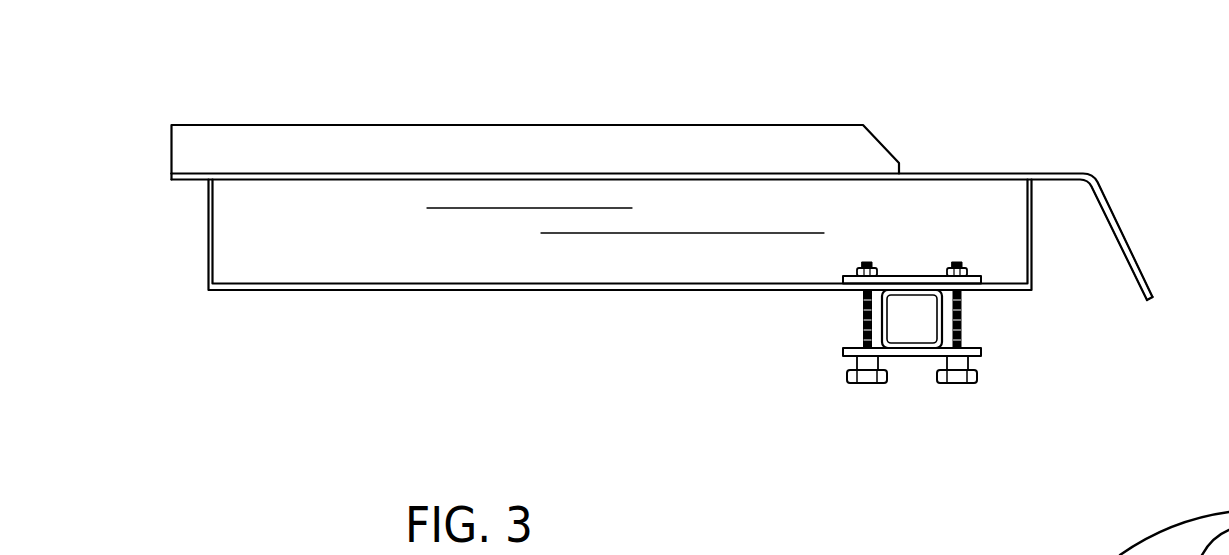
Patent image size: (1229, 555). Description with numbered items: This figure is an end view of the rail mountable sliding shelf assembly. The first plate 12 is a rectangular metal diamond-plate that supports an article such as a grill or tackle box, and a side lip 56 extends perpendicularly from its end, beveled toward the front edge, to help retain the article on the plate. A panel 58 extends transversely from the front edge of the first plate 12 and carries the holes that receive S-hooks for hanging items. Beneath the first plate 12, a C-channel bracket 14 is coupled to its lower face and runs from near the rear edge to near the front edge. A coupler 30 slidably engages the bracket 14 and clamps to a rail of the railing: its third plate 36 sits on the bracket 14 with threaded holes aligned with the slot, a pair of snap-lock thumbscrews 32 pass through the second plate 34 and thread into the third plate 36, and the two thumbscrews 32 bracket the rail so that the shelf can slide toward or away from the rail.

The first plate 12 is at (958, 175).
The bracket 14 is at (588, 200).
The coupler 30 is at (845, 350).
The thumbscrew 32 is at (868, 326).
The second plate 34 is at (917, 352).
The third plate 36 is at (863, 292).
The side lip 56 is at (458, 143).
The panel 58 is at (1127, 237).